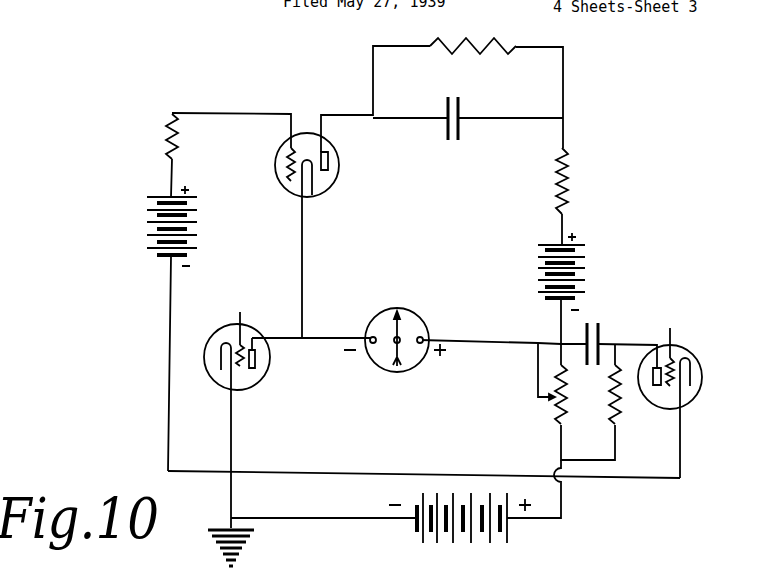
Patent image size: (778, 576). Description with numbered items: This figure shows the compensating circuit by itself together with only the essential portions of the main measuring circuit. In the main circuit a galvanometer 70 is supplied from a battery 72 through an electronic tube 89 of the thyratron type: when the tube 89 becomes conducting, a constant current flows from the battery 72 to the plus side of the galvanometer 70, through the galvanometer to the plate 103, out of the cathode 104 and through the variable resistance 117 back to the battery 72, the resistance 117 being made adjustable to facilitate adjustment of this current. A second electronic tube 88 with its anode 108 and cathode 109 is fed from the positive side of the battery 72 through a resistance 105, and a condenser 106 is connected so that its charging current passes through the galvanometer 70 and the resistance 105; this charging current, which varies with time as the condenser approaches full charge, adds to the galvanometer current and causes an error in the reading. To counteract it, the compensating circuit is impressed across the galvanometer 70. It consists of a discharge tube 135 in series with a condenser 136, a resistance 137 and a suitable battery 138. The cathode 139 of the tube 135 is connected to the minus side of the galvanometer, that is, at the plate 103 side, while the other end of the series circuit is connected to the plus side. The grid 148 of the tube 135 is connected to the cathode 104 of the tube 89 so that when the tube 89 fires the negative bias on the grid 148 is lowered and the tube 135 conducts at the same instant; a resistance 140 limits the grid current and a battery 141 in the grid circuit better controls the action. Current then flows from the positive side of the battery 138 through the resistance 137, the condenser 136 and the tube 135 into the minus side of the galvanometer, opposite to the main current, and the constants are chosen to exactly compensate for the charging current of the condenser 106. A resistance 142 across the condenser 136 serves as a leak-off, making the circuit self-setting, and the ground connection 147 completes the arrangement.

The resistance 140 is at (165, 148).
The battery 141 is at (150, 222).
The discharge tube 135 is at (306, 131).
The grid 148 is at (285, 172).
The cathode 139 is at (309, 183).
The resistance 142 is at (472, 40).
The condenser 136 is at (462, 113).
The resistance 137 is at (568, 168).
The battery 138 is at (580, 265).
The condenser 106 is at (602, 330).
The electronic tube 88 is at (673, 346).
The anode 108 is at (656, 366).
The cathode 109 is at (681, 389).
The resistance 105 is at (620, 405).
The variable resistance 117 is at (556, 408).
The galvanometer 70 is at (416, 312).
The electronic tube 89 is at (266, 368).
The plate 103 is at (255, 346).
The cathode 104 is at (232, 390).
The battery 72 is at (494, 545).
The ground 147 is at (288, 575).